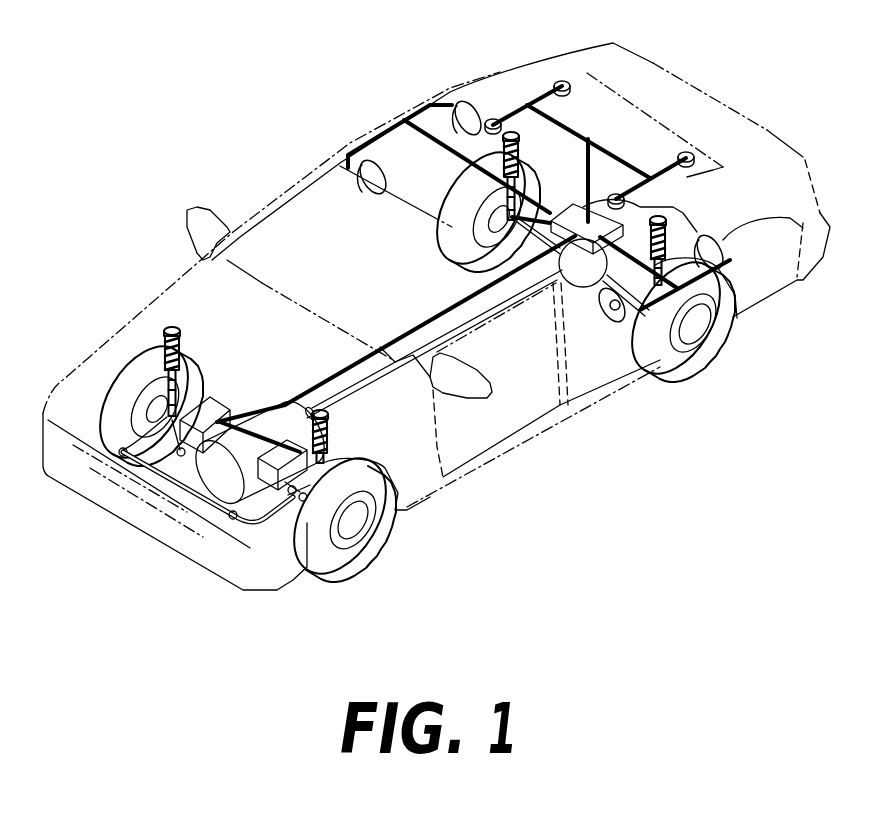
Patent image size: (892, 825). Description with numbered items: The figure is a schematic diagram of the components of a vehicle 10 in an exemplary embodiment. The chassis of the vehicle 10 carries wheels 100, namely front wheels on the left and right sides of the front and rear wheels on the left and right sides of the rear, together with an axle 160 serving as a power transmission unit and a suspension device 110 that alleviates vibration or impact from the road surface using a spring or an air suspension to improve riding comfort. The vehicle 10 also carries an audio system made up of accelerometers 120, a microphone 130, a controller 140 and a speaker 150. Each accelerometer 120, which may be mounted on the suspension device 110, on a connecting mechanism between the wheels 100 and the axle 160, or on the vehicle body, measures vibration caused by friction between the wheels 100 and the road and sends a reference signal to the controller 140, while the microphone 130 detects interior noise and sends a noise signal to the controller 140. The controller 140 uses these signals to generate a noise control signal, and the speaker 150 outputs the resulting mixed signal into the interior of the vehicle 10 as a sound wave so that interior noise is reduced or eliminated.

The vehicle 10 is at (98, 92).
The wheels 100 is at (712, 352).
The suspension device 110 is at (182, 330).
The accelerometers 120 is at (210, 397).
The microphone 130 is at (495, 118).
The controller 140 is at (595, 200).
The speaker 150 is at (363, 187).
The axle 160 is at (275, 420).